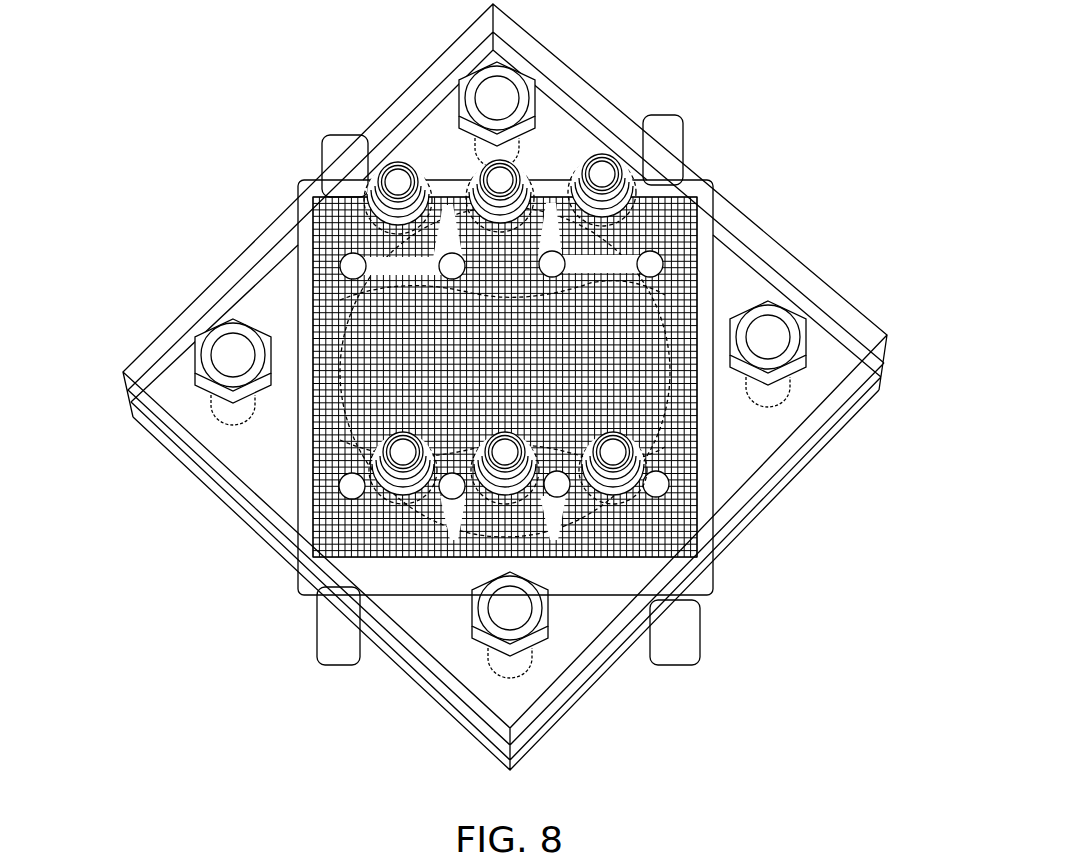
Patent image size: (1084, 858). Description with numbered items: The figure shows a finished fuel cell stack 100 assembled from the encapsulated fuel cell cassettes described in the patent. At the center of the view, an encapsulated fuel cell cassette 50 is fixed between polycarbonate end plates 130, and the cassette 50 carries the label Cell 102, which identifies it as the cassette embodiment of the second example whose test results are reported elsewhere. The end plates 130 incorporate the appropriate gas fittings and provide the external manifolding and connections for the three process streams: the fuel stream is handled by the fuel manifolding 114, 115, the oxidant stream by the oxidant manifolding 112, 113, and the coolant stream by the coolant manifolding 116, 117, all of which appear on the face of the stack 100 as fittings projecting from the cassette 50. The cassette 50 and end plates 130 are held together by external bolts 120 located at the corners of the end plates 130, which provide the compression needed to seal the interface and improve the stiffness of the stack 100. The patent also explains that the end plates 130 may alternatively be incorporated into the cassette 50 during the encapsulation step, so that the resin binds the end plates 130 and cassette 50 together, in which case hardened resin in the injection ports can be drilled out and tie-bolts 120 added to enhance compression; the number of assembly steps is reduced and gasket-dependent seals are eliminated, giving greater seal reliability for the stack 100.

The fuel cell stack 100 is at (505, 387).
The cell 102 is at (484, 358).
The oxidant manifolding 112 is at (403, 452).
The oxidant manifolding 113 is at (602, 170).
The fuel manifolding 114 is at (613, 452).
The fuel manifolding 115 is at (402, 182).
The coolant manifolding 116 is at (504, 452).
The coolant manifolding 117 is at (503, 175).
The external bolt 120 is at (228, 357).
The end plate 130 is at (270, 310).
The fuel cell cassette 50 is at (710, 567).